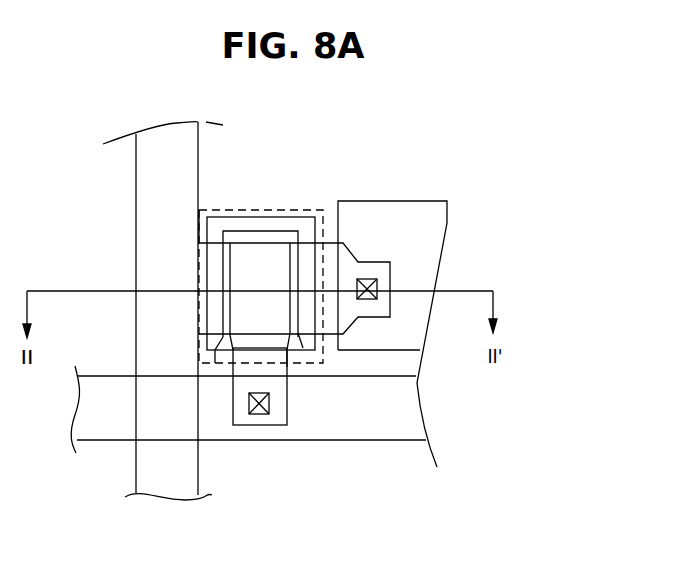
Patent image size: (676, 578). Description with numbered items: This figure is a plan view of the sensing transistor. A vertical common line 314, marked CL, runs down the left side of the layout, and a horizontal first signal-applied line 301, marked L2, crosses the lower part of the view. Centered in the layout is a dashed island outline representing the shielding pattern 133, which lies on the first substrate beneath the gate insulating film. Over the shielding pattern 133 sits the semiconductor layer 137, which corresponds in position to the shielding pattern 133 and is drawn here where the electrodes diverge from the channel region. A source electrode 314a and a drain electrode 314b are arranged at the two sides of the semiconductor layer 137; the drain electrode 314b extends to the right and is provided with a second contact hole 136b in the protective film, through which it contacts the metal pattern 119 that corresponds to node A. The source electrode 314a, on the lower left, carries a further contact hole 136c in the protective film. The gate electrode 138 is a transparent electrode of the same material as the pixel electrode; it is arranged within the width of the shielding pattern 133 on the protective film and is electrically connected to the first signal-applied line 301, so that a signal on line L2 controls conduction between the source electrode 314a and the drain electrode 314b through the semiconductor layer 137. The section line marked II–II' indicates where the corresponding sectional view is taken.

The common line 314 is at (146, 203).
The shielding pattern 133 is at (260, 210).
The drain electrode 314b is at (330, 244).
The second contact hole 136b is at (377, 287).
The metal pattern 119 is at (404, 350).
The source electrode 314a is at (213, 363).
The contact hole 136c is at (262, 412).
The gate electrode 138 is at (287, 367).
The semiconductor layer 137 is at (303, 348).
The first signal-applied line 301 is at (388, 430).